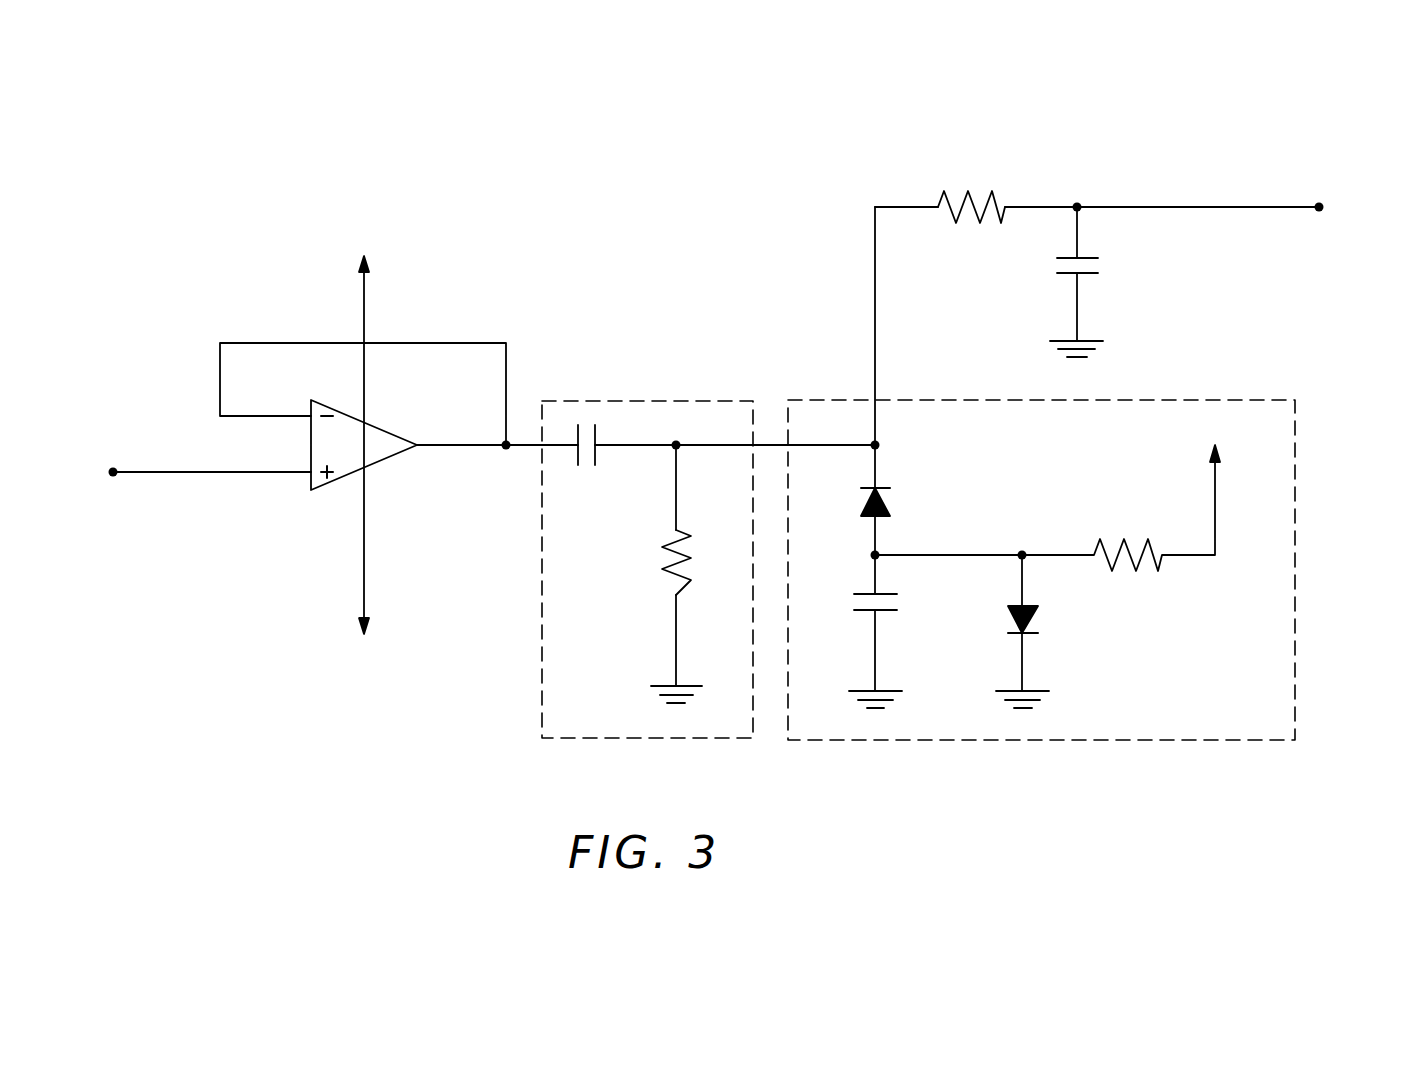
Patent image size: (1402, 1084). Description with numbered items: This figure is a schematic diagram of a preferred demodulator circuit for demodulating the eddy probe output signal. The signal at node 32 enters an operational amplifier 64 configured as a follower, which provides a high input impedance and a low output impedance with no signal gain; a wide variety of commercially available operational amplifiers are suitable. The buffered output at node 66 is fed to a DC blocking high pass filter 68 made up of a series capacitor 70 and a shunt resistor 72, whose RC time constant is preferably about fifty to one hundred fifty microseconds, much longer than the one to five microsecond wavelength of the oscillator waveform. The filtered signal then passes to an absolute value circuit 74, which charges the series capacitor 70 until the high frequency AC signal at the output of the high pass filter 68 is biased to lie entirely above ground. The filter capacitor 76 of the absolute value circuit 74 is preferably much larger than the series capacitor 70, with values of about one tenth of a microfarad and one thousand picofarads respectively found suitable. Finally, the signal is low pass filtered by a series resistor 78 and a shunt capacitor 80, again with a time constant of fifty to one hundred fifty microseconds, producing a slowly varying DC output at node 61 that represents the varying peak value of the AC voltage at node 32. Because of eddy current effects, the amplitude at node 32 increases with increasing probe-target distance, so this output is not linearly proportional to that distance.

The node 32 is at (172, 476).
The operational amplifier 64 is at (329, 490).
The node 66 is at (506, 450).
The high pass filter 68 is at (580, 740).
The series capacitor 70 is at (585, 426).
The shunt resistor 72 is at (664, 577).
The absolute value circuit 74 is at (960, 742).
The filter capacitor 76 is at (888, 601).
The series resistor 78 is at (975, 192).
The shunt capacitor 80 is at (1097, 265).
The node 61 is at (1319, 202).